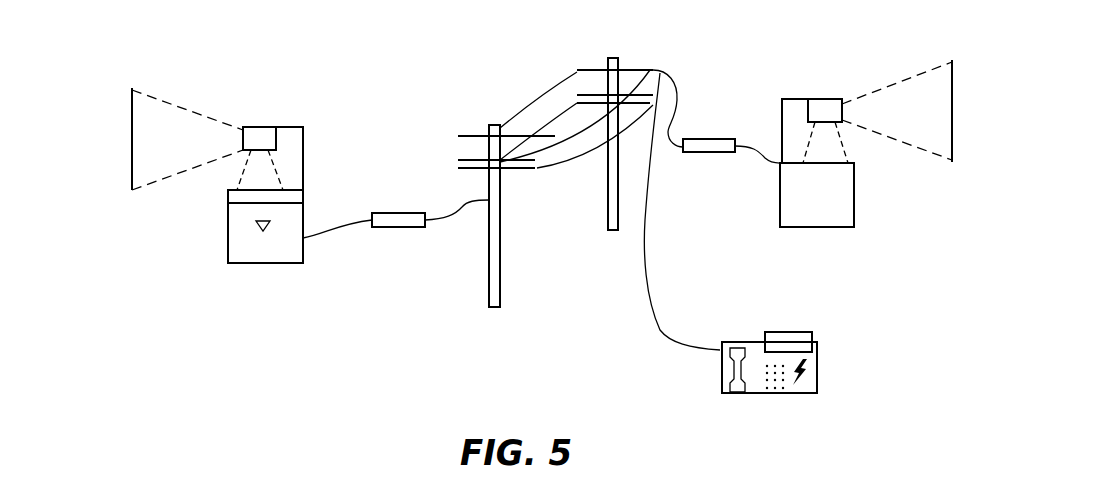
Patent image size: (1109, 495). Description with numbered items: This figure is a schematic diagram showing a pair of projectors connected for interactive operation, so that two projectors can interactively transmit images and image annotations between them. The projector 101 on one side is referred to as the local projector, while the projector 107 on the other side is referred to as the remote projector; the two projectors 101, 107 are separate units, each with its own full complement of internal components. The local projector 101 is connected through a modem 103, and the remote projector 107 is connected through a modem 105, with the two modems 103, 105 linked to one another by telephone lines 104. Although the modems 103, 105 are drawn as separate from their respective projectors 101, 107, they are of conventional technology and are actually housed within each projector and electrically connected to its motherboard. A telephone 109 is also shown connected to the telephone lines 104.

The local projector 101 is at (268, 263).
The modem 103 is at (398, 227).
The telephone lines 104 is at (541, 107).
The modem 105 is at (703, 152).
The remote projector 107 is at (832, 227).
The telephone/communication terminal 109 is at (817, 363).